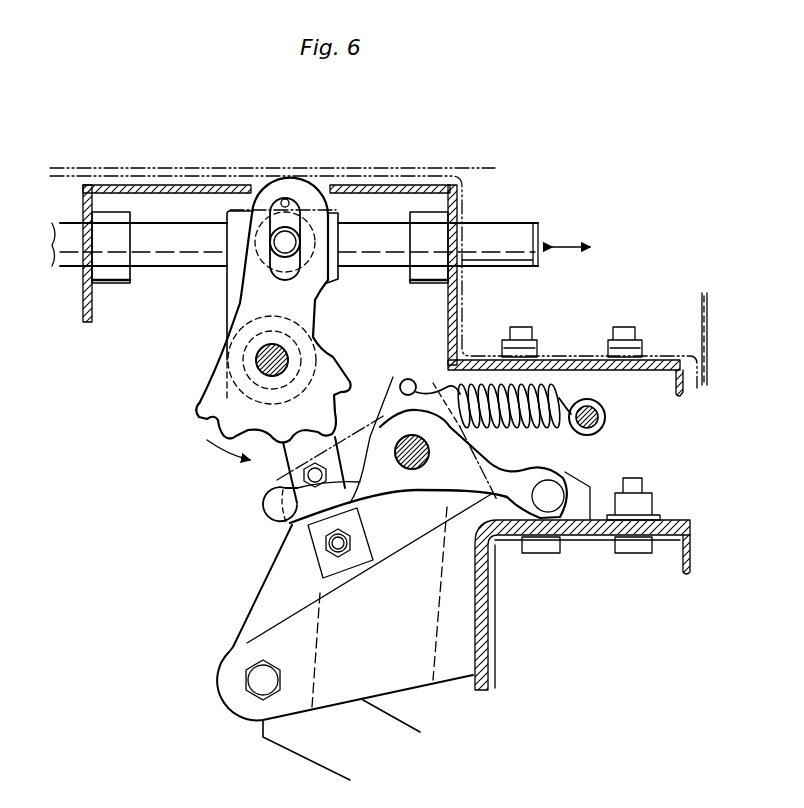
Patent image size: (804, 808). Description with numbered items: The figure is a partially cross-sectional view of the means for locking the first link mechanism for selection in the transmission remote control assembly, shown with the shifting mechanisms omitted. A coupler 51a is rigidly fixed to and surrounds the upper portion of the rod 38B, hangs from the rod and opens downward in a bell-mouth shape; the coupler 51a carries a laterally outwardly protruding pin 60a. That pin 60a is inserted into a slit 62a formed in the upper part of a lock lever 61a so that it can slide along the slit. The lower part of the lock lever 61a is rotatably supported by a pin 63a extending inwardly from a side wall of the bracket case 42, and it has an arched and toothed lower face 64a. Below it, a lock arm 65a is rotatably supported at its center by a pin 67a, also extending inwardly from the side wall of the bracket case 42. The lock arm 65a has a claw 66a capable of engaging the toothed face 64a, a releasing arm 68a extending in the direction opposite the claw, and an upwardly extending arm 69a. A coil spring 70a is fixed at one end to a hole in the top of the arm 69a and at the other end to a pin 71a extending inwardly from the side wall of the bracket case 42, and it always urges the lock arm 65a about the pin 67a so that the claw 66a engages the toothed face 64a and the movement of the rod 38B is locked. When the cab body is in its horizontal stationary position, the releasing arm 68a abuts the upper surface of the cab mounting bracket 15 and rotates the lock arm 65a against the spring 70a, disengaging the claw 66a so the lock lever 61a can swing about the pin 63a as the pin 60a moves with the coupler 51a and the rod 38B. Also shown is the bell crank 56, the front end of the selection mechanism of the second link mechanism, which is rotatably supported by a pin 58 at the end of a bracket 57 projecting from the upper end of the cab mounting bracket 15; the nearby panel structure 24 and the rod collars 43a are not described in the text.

The cab mounting bracket 15 is at (690, 562).
The panel 24 is at (410, 166).
The rod 38B is at (156, 222).
The bracket case 42 is at (462, 196).
The collar 43a is at (112, 284).
The coupler 51a is at (226, 290).
The bell crank 56 is at (248, 624).
The bracket 57 is at (408, 680).
The pin 58 is at (255, 680).
The pin 60a is at (288, 240).
The lock lever 61a is at (190, 407).
The slit 62a is at (285, 200).
The pin 63a is at (260, 352).
The toothed face 64a is at (208, 430).
The lock arm 65a is at (273, 518).
The claw 66a is at (280, 500).
The pin 67a is at (432, 451).
The releasing arm 68a is at (557, 493).
The upwardly extending arm 69a is at (404, 380).
The coil spring 70a is at (522, 388).
The pin 71a is at (605, 415).